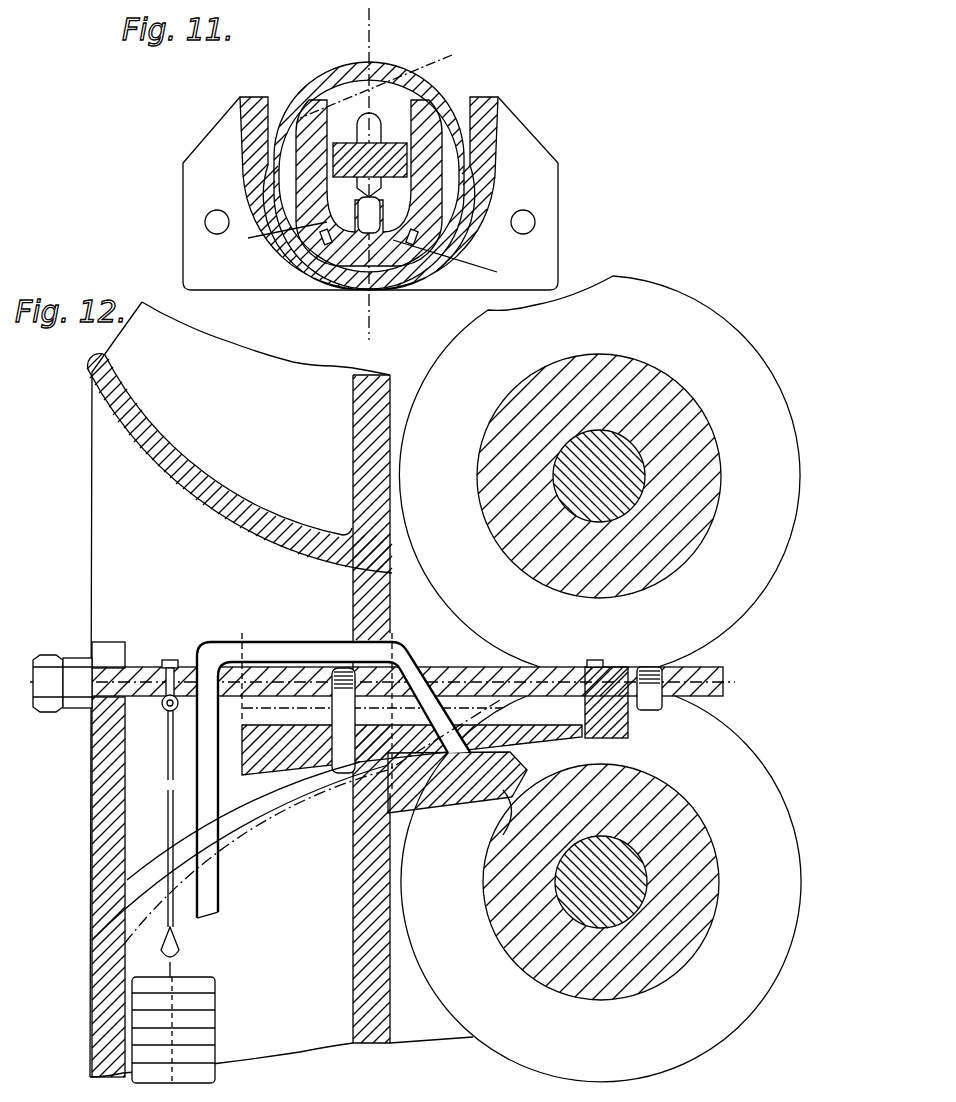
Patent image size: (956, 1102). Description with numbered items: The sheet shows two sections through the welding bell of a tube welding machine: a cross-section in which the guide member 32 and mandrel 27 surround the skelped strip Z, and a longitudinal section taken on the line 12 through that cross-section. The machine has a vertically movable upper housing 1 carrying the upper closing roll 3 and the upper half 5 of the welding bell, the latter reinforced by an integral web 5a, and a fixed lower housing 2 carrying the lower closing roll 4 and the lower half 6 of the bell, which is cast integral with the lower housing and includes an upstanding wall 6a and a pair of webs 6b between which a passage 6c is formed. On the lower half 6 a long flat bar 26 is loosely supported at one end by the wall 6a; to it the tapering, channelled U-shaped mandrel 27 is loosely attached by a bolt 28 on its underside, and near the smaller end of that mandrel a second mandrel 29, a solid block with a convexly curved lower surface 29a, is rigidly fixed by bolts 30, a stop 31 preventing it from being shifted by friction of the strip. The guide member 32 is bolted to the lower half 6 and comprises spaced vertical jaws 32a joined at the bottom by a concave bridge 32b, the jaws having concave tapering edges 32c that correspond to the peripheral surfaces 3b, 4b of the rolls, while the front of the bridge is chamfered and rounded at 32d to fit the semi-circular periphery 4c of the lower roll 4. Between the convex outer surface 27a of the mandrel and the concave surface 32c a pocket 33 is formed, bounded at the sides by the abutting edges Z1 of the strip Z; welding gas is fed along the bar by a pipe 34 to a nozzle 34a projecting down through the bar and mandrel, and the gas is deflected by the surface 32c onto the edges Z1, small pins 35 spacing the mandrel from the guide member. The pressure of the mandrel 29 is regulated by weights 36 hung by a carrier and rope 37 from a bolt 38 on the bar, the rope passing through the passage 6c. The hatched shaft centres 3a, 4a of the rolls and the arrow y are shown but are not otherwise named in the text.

In FIG. 12, the upper housing 1 is at (347, 709).
In FIG. 12, the lower housing 2 is at (281, 1015).
In FIG. 12, the upper closing roll 3 is at (599, 471).
In FIG. 12, the upper roll shaft 3a is at (631, 490).
In FIG. 12, the peripheral surface of upper closing roll 3b is at (520, 665).
In FIG. 12, the lower closing roll 4 is at (601, 889).
In FIG. 12, the lower roll shaft 4a is at (636, 893).
In FIG. 12, the peripheral surface of lower closing roll 4b is at (512, 708).
In FIG. 12, the semi-circular periphery of lower closing roll 4c is at (503, 825).
In FIG. 12, the upper half of welding bell 5 is at (240, 689).
In FIG. 12, the web 5a is at (183, 368).
In FIG. 12, the lower half of welding bell 6 is at (121, 887).
In FIG. 12, the upstanding wall 6a is at (92, 722).
In FIG. 12, the webs 6b is at (267, 924).
In FIG. 12, the passage 6c is at (333, 1013).
In FIG. 11, the section line 12— 12 is at (382, 175).
In FIG. 11, the flat bar 26 is at (402, 157).
In FIG. 11, the mandrel 27 is at (310, 122).
In FIG. 12, the mandrel 27 is at (296, 755).
In FIG. 11, the convex outer surface of mandrel 27a is at (392, 240).
In FIG. 12, the bolt 28 is at (340, 710).
In FIG. 12, the second mandrel 29 is at (628, 727).
In FIG. 12, the lower surface of second mandrel 29a is at (620, 739).
In FIG. 12, the bolts 30 is at (603, 665).
In FIG. 12, the stop 31 is at (662, 702).
In FIG. 11, the guide member 32 is at (370, 193).
In FIG. 12, the guide member 32 is at (354, 826).
In FIG. 11, the vertical jaws 32a is at (252, 122).
In FIG. 12, the vertical jaws 32a is at (447, 628).
In FIG. 11, the concave bridge 32b is at (338, 262).
In FIG. 12, the concave bridge 32b is at (495, 780).
In FIG. 11, the concave inner surface 32c is at (363, 272).
In FIG. 12, the concave inner surface 32c is at (478, 660).
In FIG. 12, the chamfered front of bridge 32d is at (522, 769).
In FIG. 11, the partial annulus or pocket 33 is at (350, 246).
In FIG. 12, the partial annulus or pocket 33 is at (460, 767).
In FIG. 11, the pipe 34 is at (373, 118).
In FIG. 12, the pipe 34 is at (205, 648).
In FIG. 11, the nozzle 34a is at (374, 212).
In FIG. 12, the nozzle 34a is at (480, 650).
In FIG. 11, the projecting pins 35 is at (416, 239).
In FIG. 12, the weights 36 is at (143, 998).
In FIG. 12, the carrier and rope 37 is at (162, 968).
In FIG. 12, the bolt 38 is at (161, 708).
In FIG. 11, the direction arrow y is at (346, 30).
In FIG. 11, the skelped strip Z is at (383, 82).
In FIG. 11, the abutting edges of strip Z1 is at (372, 253).